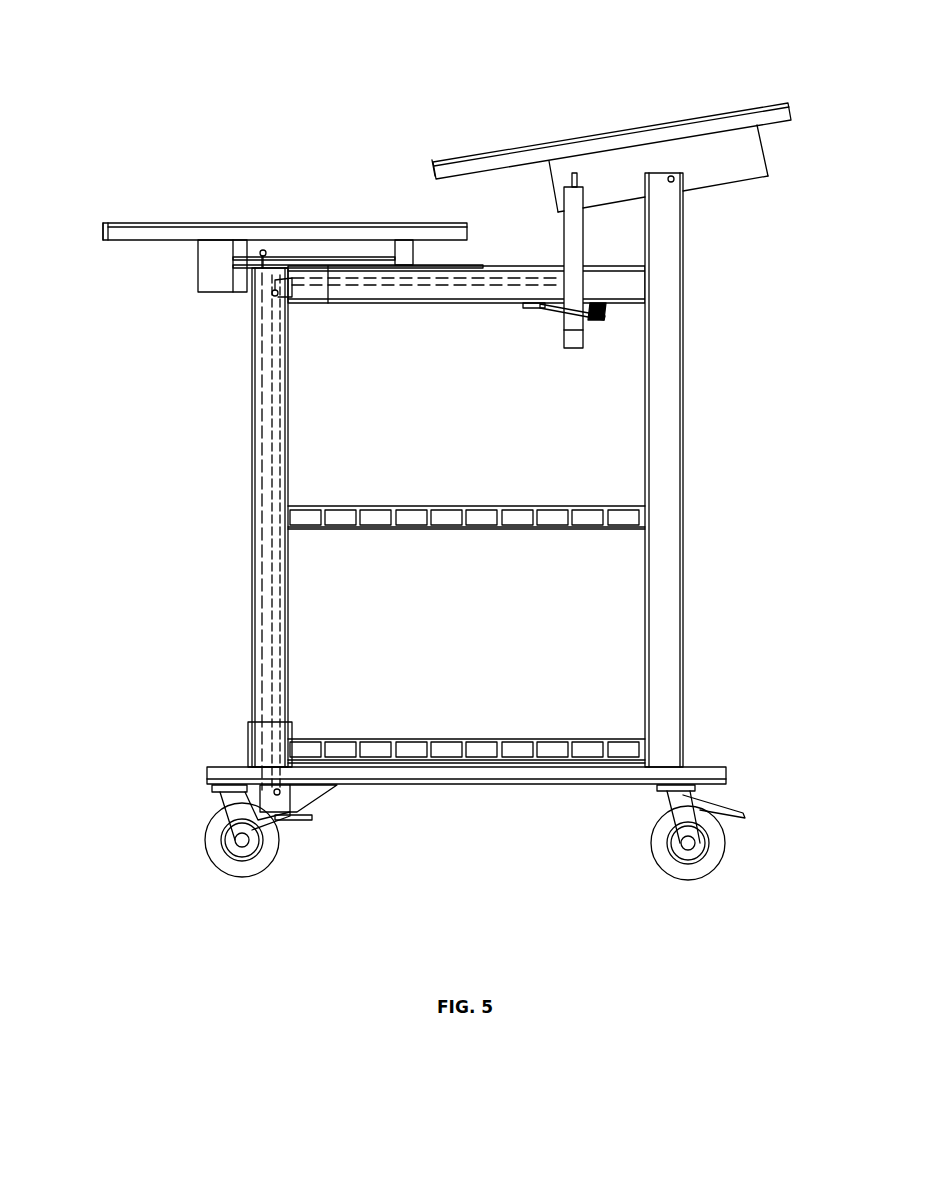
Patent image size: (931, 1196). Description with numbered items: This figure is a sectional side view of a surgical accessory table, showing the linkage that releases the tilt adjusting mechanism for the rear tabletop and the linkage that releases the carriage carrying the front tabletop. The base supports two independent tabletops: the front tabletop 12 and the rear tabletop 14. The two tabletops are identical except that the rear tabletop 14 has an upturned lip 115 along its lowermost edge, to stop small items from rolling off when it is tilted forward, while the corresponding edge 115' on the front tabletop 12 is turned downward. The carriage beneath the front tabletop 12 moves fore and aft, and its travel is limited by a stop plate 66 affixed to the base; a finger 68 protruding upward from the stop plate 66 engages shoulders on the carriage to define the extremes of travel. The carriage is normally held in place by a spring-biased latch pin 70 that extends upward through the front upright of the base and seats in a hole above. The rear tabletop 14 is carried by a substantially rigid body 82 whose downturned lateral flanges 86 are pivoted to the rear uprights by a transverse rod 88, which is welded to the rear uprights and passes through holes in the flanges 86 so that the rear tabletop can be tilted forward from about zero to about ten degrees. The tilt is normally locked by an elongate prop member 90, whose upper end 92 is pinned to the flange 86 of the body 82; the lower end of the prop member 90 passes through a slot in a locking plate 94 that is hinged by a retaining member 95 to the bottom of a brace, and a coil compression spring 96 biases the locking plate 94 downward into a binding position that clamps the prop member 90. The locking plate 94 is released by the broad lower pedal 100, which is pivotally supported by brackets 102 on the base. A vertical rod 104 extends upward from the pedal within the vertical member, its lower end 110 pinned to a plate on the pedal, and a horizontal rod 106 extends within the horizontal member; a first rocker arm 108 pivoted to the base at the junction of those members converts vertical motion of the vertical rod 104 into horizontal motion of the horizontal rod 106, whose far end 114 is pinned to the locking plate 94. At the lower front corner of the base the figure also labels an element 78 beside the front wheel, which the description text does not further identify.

The front tabletop 12 is at (138, 220).
The rear tabletop 14 is at (728, 110).
The stop plate 66 is at (253, 295).
The finger 68 is at (262, 257).
The latch pin 70 is at (256, 523).
The caster assembly 78 is at (182, 825).
The rigid body 82 is at (782, 150).
The downturned lateral flange 86 is at (735, 162).
The transverse rod 88 is at (672, 182).
The prop member 90 is at (572, 338).
The upper end of prop member 92 is at (573, 197).
The locking plate 94 is at (597, 325).
The retaining member 95 is at (542, 310).
The coil compression spring 96 is at (610, 313).
The lower pedal 100 is at (220, 819).
The bracket 102 is at (313, 798).
The vertical rod 104 is at (272, 405).
The horizontal rod 106 is at (466, 301).
The first rocker arm 108 is at (293, 297).
The lower end of vertical rod 110 is at (273, 723).
The far end of horizontal rod 114 is at (557, 283).
The upturned lip 115 is at (392, 147).
The downturned edge 115' is at (66, 272).